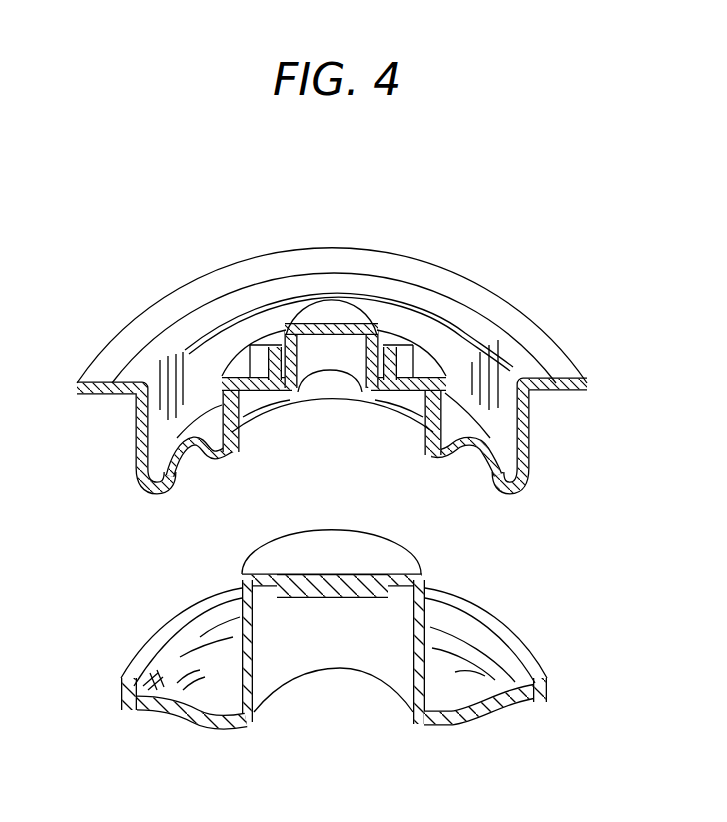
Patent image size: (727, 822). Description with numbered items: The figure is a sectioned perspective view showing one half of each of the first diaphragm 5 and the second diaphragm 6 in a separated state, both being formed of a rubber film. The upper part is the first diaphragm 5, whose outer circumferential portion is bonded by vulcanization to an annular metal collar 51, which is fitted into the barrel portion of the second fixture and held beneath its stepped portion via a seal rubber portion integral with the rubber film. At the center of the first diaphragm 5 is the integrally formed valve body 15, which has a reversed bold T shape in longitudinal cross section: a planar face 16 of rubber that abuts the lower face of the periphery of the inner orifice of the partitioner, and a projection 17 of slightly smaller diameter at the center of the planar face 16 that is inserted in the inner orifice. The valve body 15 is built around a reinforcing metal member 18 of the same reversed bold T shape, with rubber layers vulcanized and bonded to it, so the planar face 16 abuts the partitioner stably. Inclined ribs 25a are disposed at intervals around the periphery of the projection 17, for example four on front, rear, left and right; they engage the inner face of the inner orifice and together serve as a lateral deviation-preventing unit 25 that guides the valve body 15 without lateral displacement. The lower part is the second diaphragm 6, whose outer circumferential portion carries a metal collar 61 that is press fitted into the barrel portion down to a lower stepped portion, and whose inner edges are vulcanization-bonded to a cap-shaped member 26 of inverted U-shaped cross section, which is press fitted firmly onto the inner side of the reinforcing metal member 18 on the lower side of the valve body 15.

The first diaphragm 5 is at (516, 272).
The valve body 15 is at (218, 360).
The planar face 16 is at (245, 358).
The projection 17 is at (318, 307).
The reinforcing metal member 18 is at (360, 325).
The lateral deviation-preventing unit 25 is at (263, 346).
The inclined ribs 25a is at (422, 345).
The annular metal collar 51 is at (574, 382).
The second diaphragm 6 is at (562, 638).
The cap-shaped member 26 is at (427, 623).
The metal collar 61 is at (548, 692).